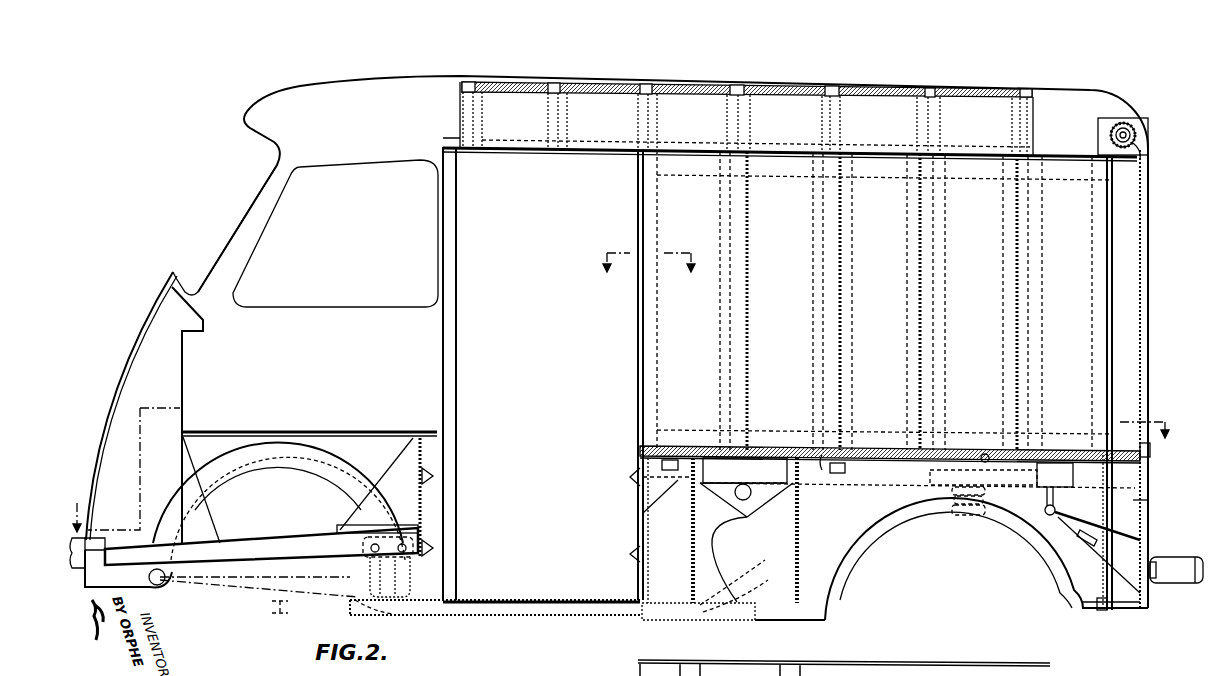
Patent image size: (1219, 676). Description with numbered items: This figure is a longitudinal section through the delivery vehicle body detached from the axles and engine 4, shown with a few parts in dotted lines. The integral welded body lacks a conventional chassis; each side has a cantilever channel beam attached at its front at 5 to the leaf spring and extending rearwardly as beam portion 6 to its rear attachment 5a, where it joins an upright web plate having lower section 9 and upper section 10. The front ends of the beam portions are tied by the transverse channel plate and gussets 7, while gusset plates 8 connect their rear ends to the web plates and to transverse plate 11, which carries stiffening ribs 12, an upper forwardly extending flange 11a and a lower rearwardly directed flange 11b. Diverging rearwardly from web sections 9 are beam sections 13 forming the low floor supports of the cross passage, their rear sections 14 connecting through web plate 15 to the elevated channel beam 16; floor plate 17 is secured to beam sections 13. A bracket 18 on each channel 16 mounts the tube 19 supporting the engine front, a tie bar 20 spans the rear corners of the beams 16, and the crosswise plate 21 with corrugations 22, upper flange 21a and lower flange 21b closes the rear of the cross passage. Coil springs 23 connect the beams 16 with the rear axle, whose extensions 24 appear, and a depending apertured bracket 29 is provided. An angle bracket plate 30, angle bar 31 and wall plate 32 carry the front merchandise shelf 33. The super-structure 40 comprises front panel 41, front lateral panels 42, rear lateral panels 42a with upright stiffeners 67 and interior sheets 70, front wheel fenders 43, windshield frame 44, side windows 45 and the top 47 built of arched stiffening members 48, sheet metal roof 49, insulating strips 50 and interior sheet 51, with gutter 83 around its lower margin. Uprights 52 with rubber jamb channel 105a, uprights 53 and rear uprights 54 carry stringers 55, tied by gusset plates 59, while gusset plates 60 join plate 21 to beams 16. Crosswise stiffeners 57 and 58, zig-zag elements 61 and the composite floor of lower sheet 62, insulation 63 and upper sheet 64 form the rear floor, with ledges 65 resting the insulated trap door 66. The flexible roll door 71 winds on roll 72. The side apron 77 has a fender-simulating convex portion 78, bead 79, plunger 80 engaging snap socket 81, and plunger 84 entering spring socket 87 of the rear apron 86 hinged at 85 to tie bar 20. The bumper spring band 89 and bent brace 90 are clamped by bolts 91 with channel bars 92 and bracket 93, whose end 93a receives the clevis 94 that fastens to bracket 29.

The engine 4 is at (624, 466).
The front attachment of channel beam 5 is at (150, 588).
The rear attachment of channel beam 5a is at (362, 577).
The beam portion 6 is at (265, 545).
The transverse channel plate and gussets 7 is at (108, 547).
The gusset plates 8 is at (352, 527).
The lower section of web plate 9 is at (357, 598).
The upper section of web plate 10 is at (398, 500).
The transverse plate 11 is at (433, 500).
The forwardly extending flange 11a is at (413, 437).
The rearwardly directed flange 11b is at (433, 578).
The stiffening ribs 12 is at (433, 476).
The beam sections 13 is at (527, 617).
The rear sections of beam 14 is at (757, 612).
The web plate 15 is at (715, 530).
The channel beam 16 is at (832, 473).
The floor plate 17 is at (540, 600).
The bracket 18 is at (778, 505).
The tube 19 is at (748, 500).
The transverse tie bar 20 is at (1150, 464).
The crosswise extending plate 21 is at (634, 527).
The rearwardly extending flange 21a is at (660, 445).
The forwardly directed flange 21b is at (628, 602).
The corrugations 22 is at (630, 476).
The coil springs 23 is at (960, 515).
The extensions 24 is at (644, 249).
The depending apertured bracket 29 is at (1045, 512).
The angle bracket plate 30 is at (205, 525).
The angle bar 31 is at (178, 446).
The wall plate 32 is at (183, 370).
The front merchandise shelf plate 33 is at (312, 430).
The super-structure 40 is at (1150, 205).
The front panel 41 is at (128, 352).
The front lateral panels 42 is at (232, 415).
The rear lateral panels 42a is at (883, 343).
The front wheel fenders 43 is at (262, 457).
The windshield frame 44 is at (250, 218).
The side windows 45 is at (335, 233).
The top 47 is at (325, 81).
The arched stiffening members 48 is at (565, 82).
The sheet metal roof 49 is at (678, 83).
The insulating strips 50 is at (520, 92).
The interior metal sheet 51 is at (675, 94).
The front uprights 52 is at (447, 297).
The rear uprights 53 is at (640, 315).
The roof-supporting uprights 54 is at (1108, 233).
The angle iron stringers 55 is at (600, 152).
The crosswise stiffener 57 is at (920, 480).
The crosswise stiffener 58 is at (1037, 482).
The gusset plates 59 is at (650, 178).
The gusset plates 60 is at (663, 480).
The zig-zag reinforcing elements 61 is at (865, 430).
The lower floor sheet 62 is at (985, 454).
The floor insulation 63 is at (950, 450).
The upper floor sheet 64 is at (1050, 450).
The ledges 65 is at (770, 450).
The insulated trap door 66 is at (706, 450).
The upright stiffeners 67 is at (748, 257).
The interior sheets 70 is at (883, 300).
The rear flexible roll door 71 is at (1143, 287).
The roll 72 is at (1140, 133).
The side apron 77 is at (860, 550).
The fender-simulating convex portion 78 is at (880, 540).
The inwardly curved bead 79 is at (855, 600).
The spear-head shaped plunger 80 is at (725, 577).
The snap socket 81 is at (722, 593).
The gutter 83 is at (1150, 155).
The spear-shaped plunger 84 is at (1080, 610).
The hinge 85 is at (1152, 450).
The rear apron 86 is at (1150, 505).
The spring socket 87 is at (1102, 612).
The spring band 89 is at (1203, 585).
The bent brace 90 is at (1172, 585).
The bolt and nut combinations 91 is at (1160, 560).
The channel bars 92 is at (1095, 560).
The bracket 93 is at (1120, 533).
The clevis screw attachment 93a is at (1080, 575).
The clevis 94 is at (1060, 525).
The channel 105a is at (452, 342).